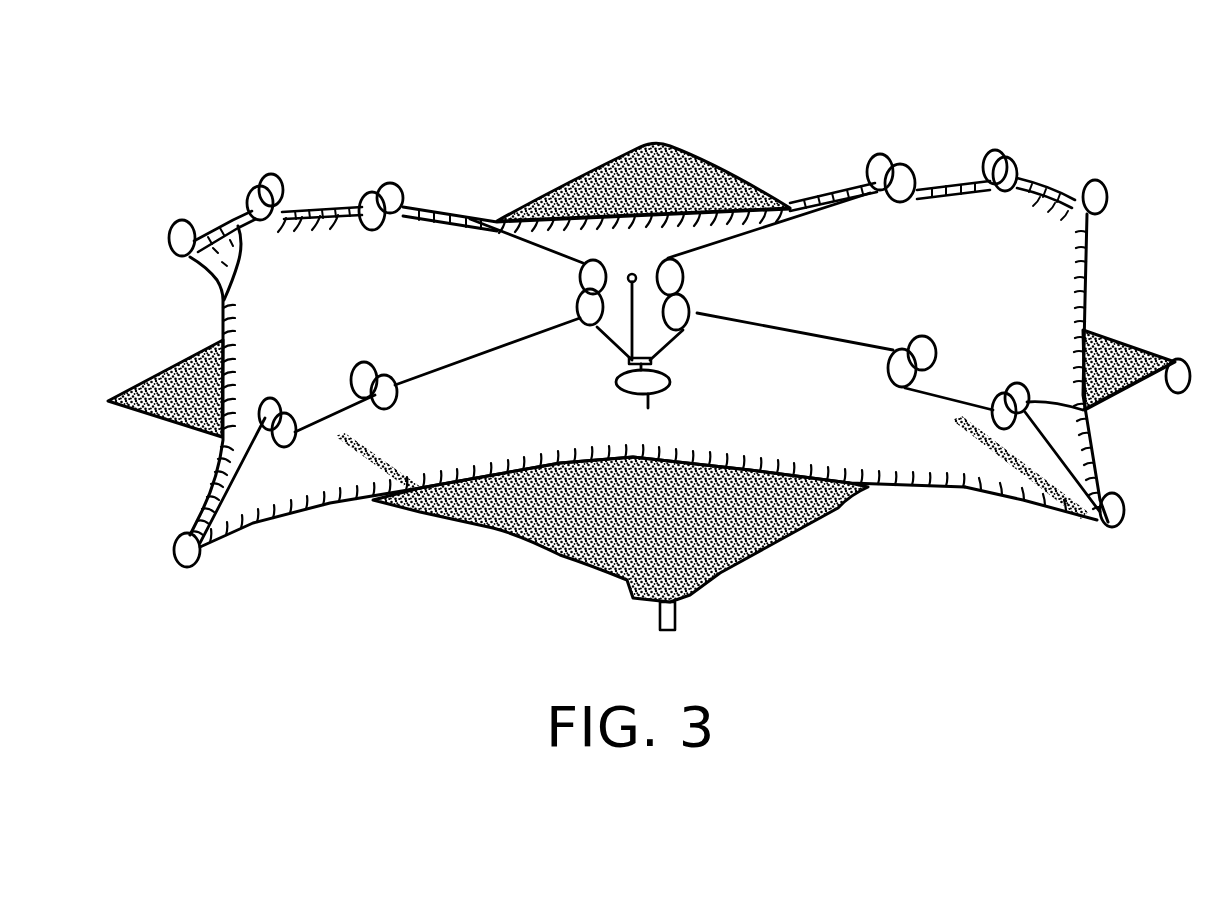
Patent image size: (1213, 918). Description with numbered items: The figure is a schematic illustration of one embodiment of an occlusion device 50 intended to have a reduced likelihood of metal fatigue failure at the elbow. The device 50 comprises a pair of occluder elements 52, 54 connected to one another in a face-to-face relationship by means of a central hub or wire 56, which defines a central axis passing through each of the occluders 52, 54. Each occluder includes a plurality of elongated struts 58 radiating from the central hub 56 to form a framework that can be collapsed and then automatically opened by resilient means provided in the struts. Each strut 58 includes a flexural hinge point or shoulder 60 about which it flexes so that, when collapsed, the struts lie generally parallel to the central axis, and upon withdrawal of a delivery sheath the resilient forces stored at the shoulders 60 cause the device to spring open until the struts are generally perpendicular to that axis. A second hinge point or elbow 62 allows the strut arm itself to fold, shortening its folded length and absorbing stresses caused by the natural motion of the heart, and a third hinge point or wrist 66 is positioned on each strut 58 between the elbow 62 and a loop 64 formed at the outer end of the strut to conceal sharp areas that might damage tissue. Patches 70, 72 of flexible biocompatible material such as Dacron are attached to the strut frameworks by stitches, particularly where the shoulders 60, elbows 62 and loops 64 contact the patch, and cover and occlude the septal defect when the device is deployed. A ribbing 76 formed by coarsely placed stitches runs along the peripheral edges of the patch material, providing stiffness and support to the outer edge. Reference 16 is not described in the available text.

The occlusion device 50 is at (893, 76).
The occluder element 52 is at (219, 297).
The occluder element 54 is at (787, 533).
The central hub or wire 56 is at (633, 297).
The elongated strut 58 is at (490, 236).
The shoulder 60 is at (688, 281).
The elbow 62 is at (407, 180).
The loop 64 is at (177, 230).
The wrist 66 is at (280, 176).
The patch 70 is at (895, 460).
The patch 72 is at (713, 562).
The ribbing 76 is at (237, 222).
The bottom right edge 16 is at (977, 484).